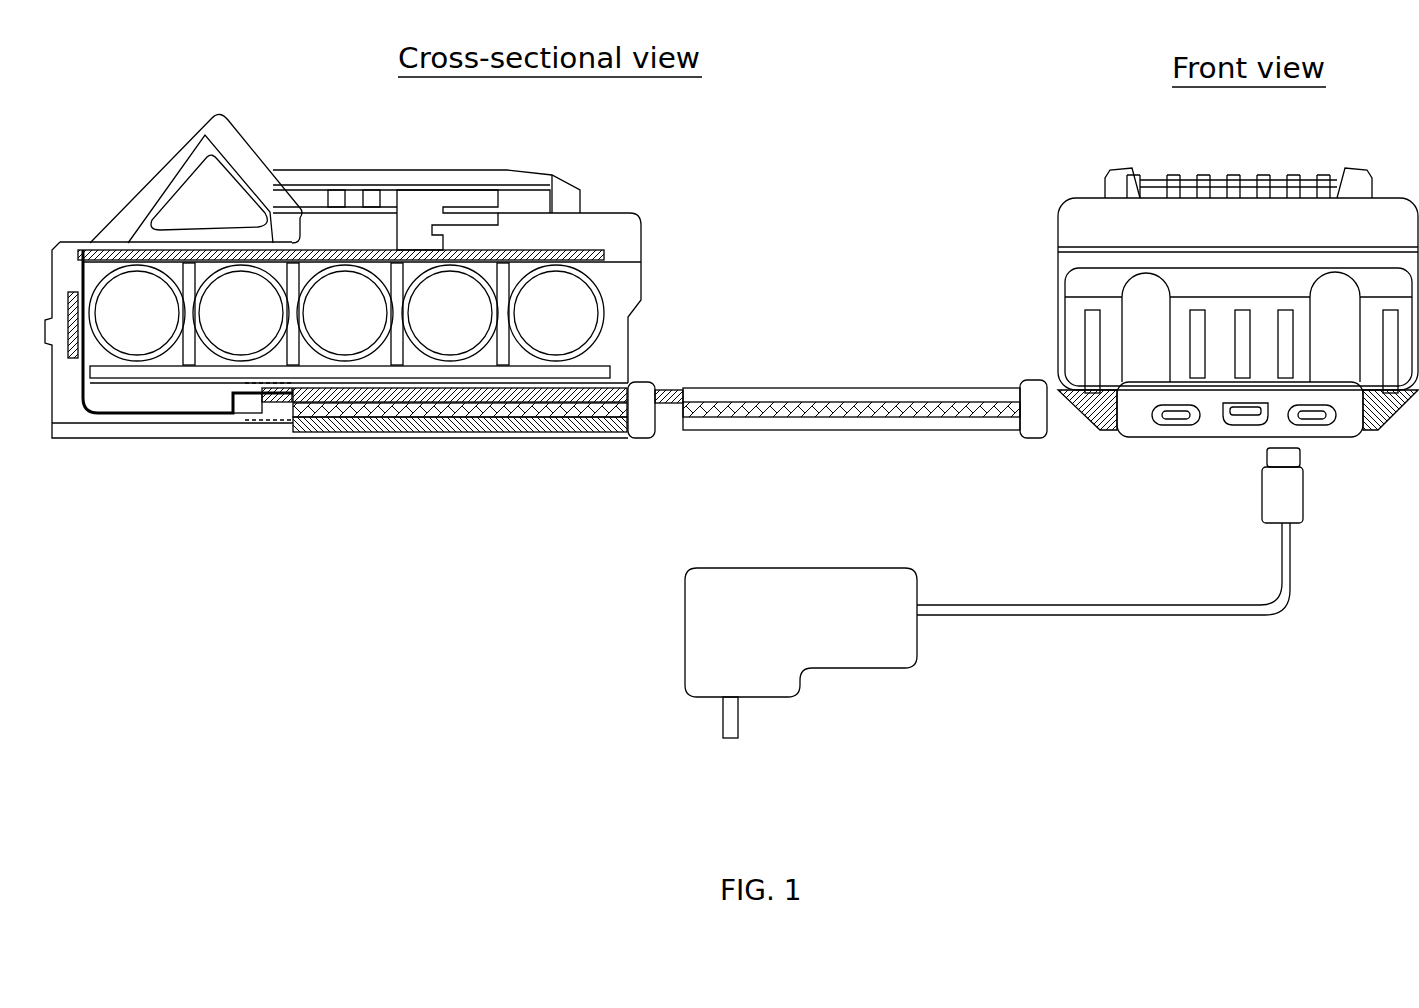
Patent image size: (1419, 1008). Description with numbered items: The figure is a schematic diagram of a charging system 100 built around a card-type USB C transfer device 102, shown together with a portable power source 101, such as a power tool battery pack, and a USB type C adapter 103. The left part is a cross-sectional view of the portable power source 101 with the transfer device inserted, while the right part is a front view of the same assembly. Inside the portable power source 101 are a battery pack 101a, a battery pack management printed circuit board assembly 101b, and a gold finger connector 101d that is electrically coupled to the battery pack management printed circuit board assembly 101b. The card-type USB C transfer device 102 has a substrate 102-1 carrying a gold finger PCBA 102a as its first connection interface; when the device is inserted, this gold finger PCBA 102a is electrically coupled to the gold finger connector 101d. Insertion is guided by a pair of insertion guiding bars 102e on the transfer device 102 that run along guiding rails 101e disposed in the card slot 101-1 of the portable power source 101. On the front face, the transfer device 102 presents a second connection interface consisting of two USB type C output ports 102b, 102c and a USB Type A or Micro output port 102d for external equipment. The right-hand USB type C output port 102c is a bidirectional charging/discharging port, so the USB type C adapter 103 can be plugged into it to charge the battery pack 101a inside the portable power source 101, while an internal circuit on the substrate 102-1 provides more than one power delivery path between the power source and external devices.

The charging system 100 is at (826, 57).
The portable power source 101 is at (313, 143).
The battery pack 101a is at (565, 308).
The battery pack management printed circuit board assembly (PCBA) 101b is at (600, 250).
The gold finger connector 101d is at (250, 425).
The guiding rails 101e is at (425, 425).
The card slot 101-1 is at (512, 437).
The card-type USB C transfer device 102 is at (860, 390).
The gold finger PCBA 102a is at (666, 390).
The USB type C output port 102b is at (1177, 427).
The USB type C output port 102c is at (1332, 428).
The USB Type A or Micro output port 102d is at (1243, 428).
The insertion guiding bars 102e is at (707, 412).
The substrate 102-1 is at (848, 430).
The USB type C adapter 103 is at (890, 568).